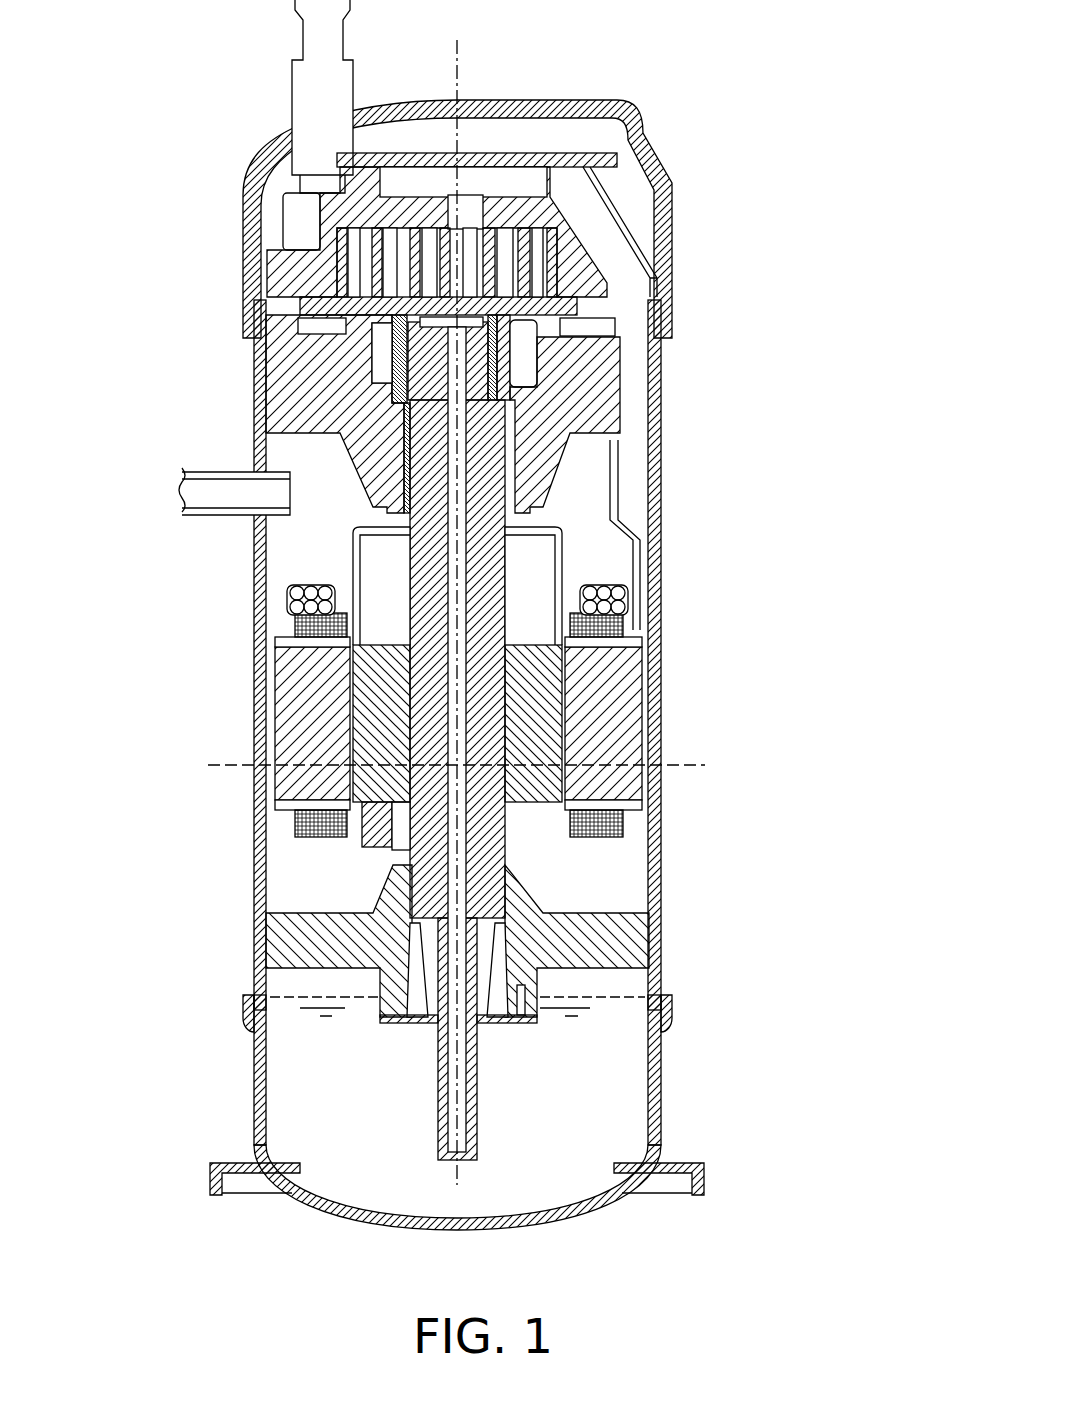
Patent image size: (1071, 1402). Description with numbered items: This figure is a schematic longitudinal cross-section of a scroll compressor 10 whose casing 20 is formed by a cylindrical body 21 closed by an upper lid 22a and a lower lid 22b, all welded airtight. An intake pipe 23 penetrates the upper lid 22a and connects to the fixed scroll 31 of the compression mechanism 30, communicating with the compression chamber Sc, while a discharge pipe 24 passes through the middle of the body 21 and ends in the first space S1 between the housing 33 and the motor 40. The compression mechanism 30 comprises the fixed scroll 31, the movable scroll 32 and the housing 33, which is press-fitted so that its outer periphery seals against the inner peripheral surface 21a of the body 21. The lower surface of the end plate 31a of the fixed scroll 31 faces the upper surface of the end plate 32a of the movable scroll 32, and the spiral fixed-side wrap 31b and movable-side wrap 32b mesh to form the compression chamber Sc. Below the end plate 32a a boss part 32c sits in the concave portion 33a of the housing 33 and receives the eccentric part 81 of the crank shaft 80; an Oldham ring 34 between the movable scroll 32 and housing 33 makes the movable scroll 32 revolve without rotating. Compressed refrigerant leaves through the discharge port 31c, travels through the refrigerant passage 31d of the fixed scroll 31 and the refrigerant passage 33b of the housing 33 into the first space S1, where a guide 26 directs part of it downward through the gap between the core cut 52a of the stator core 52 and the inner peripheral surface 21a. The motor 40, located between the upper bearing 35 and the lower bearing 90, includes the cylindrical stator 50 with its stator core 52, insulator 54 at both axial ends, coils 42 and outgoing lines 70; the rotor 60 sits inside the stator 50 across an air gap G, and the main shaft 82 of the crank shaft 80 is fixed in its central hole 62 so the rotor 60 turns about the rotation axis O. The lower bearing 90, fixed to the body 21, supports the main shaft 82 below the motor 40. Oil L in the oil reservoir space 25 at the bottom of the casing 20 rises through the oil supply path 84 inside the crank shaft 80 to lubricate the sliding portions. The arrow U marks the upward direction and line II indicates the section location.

The scroll compressor 10 is at (486, 615).
The casing 20 is at (448, 665).
The body 21 is at (454, 655).
The inner peripheral surface 21a is at (651, 490).
The upper lid 22a is at (245, 287).
The lower lid 22b is at (252, 1090).
The intake pipe 23 is at (301, 43).
The discharge pipe 24 is at (230, 472).
The oil reservoir space 25 is at (522, 1165).
The guide 26 is at (638, 553).
The compression mechanism 30 is at (450, 290).
The fixed scroll 31 is at (444, 182).
The end plate 31a is at (395, 210).
The fixed-side wrap 31b is at (348, 262).
The discharge port 31c is at (480, 208).
The refrigerant passage 31d is at (585, 180).
The movable scroll 32 is at (450, 315).
The end plate 32a is at (300, 315).
The movable-side wrap 32b is at (560, 300).
The boss part 32c is at (530, 345).
The housing 33 is at (458, 414).
The concave portion 33a is at (560, 380).
The refrigerant passage 33b is at (632, 425).
The Oldham ring 34 is at (300, 330).
The upper bearing 35 is at (310, 454).
The motor 40 is at (458, 696).
The coil 42 is at (300, 625).
The stator 50 is at (458, 696).
The stator core 52 is at (506, 726).
The core cut 52a is at (630, 800).
The insulator 54 is at (286, 641).
The rotor 60 is at (377, 723).
The central hole 62 is at (353, 760).
The outgoing lines 70 is at (312, 585).
The crank shaft 80 is at (462, 612).
The eccentric part 81 is at (480, 360).
The main shaft 82 is at (410, 528).
The oil supply path 84 is at (400, 833).
The lower bearing 90 is at (540, 897).
The rotation axis O is at (457, 54).
The compression chamber Sc is at (300, 250).
The first space S1 is at (612, 529).
The air gap G is at (564, 802).
The oil L is at (630, 1127).
The upward direction U is at (808, 1085).
The section line II is at (238, 762).